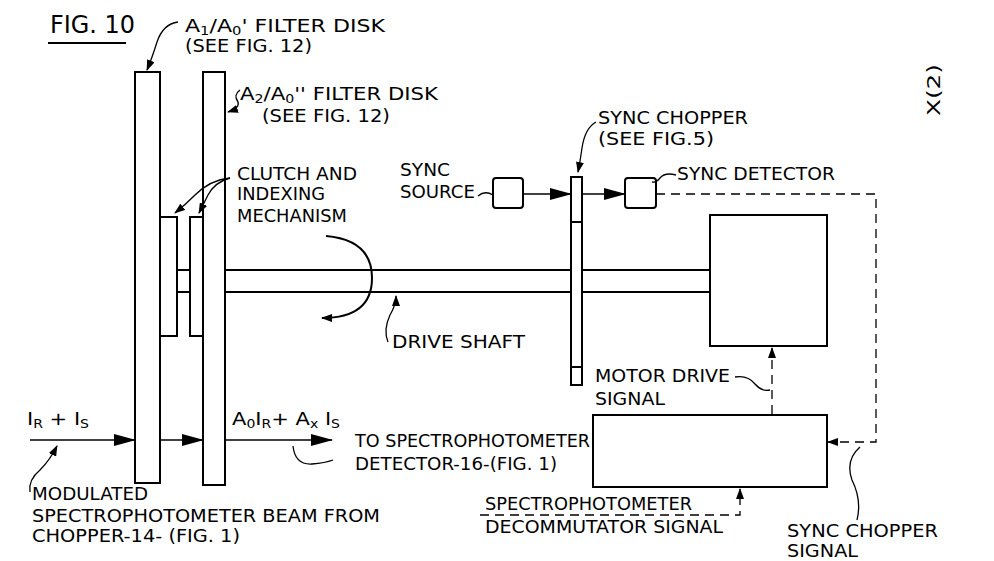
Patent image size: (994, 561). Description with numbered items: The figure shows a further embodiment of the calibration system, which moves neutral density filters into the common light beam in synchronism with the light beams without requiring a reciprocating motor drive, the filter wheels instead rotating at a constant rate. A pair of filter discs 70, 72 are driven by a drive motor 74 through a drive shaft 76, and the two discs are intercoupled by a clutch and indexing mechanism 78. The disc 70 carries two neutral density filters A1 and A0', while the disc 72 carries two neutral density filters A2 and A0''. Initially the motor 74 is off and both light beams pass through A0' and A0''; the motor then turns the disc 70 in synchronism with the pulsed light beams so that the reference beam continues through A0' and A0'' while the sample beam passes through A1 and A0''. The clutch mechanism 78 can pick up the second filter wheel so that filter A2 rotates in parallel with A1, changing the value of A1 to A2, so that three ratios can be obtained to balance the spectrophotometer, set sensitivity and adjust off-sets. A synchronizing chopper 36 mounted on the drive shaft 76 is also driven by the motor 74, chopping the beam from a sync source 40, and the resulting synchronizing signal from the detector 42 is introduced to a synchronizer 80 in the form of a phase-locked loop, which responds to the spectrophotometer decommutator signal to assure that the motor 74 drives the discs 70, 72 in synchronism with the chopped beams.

The filter disc 70 is at (146, 172).
The filter disc 72 is at (216, 158).
The clutch and indexing mechanism 78 is at (196, 236).
The drive shaft 76 is at (459, 293).
The sync source 40 is at (510, 186).
The synchronizing chopper 36 is at (585, 338).
The detector 42 is at (645, 200).
The drive motor 74 is at (805, 244).
The synchronizer 80 is at (800, 477).